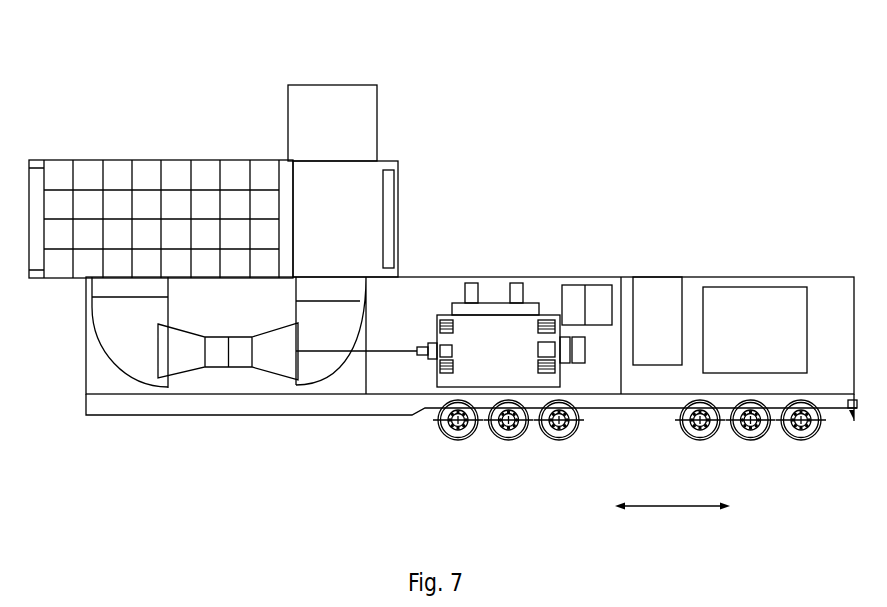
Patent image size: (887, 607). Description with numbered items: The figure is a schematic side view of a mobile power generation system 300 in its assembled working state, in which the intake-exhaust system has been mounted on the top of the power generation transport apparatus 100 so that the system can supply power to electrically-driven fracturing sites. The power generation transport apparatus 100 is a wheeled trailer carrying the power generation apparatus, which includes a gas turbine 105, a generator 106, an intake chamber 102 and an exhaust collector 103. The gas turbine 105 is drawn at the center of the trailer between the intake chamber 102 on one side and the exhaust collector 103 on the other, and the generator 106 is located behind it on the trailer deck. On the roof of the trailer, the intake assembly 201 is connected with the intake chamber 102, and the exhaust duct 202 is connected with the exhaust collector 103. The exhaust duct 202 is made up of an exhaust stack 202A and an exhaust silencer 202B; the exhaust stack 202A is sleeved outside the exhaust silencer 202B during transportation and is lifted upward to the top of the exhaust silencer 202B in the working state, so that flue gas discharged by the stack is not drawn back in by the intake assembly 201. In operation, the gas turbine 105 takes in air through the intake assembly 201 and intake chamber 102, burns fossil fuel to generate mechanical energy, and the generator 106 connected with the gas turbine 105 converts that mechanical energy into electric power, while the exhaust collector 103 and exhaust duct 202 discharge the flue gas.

The power generation transport apparatus 100 is at (560, 246).
The intake chamber 102 is at (123, 350).
The exhaust collector 103 is at (319, 354).
The gas turbine 105 is at (224, 370).
The generator 106 is at (493, 387).
The intake assembly 201 is at (145, 150).
The exhaust duct 202 is at (397, 144).
The exhaust stack 202A is at (338, 77).
The exhaust silencer 202B is at (359, 186).
The mobile power generation system 300 is at (470, 532).